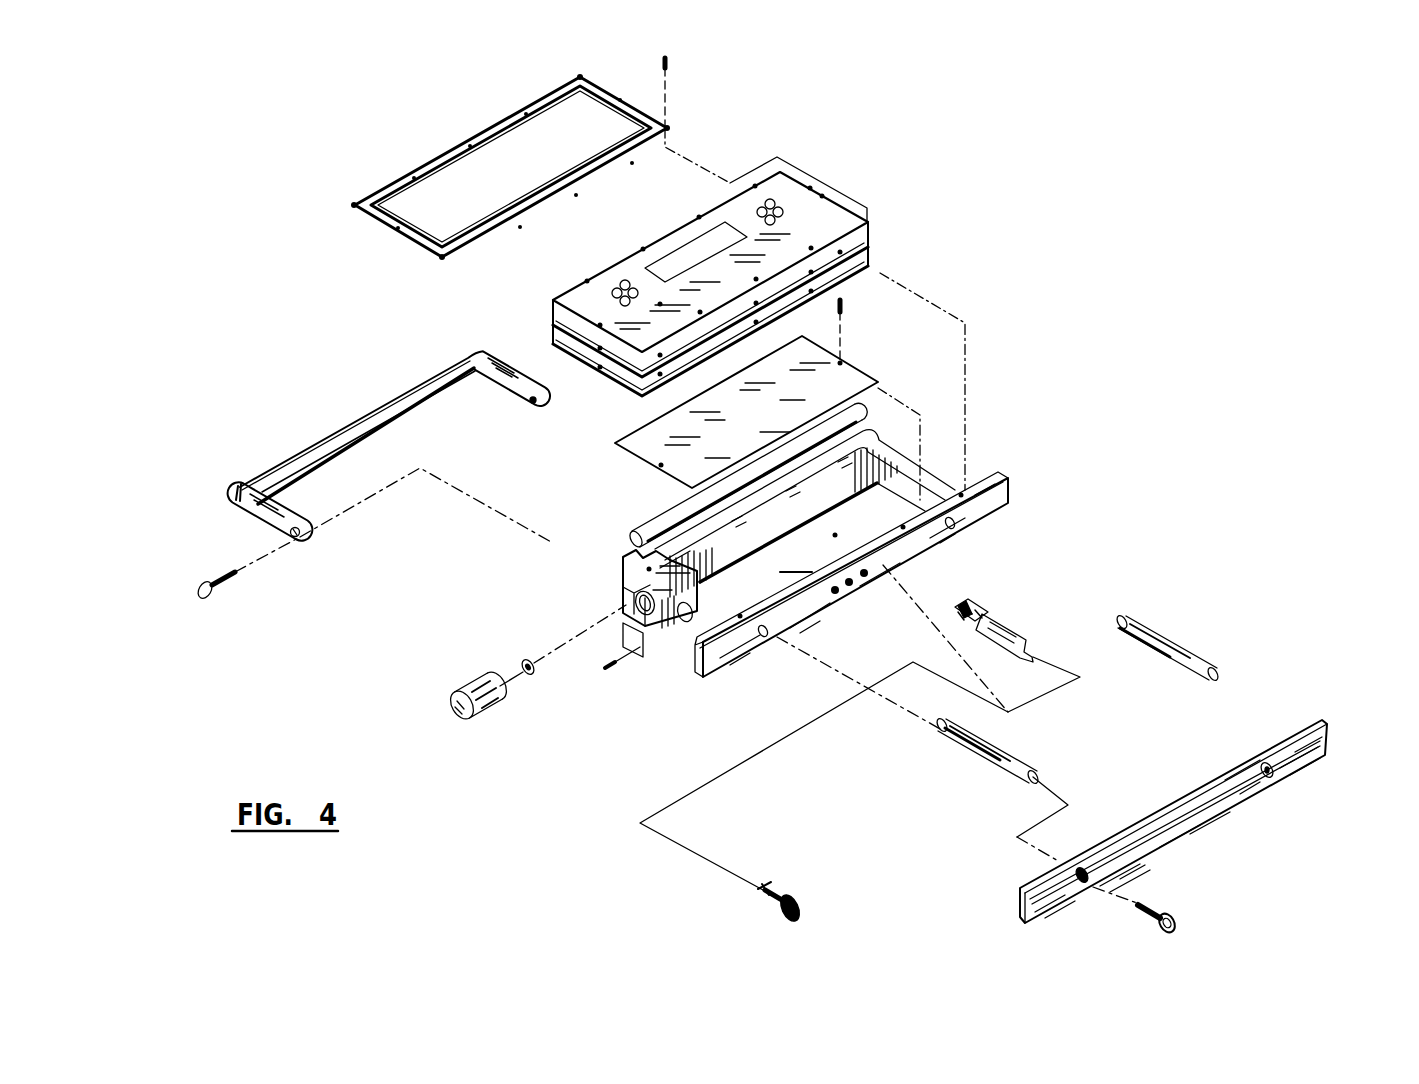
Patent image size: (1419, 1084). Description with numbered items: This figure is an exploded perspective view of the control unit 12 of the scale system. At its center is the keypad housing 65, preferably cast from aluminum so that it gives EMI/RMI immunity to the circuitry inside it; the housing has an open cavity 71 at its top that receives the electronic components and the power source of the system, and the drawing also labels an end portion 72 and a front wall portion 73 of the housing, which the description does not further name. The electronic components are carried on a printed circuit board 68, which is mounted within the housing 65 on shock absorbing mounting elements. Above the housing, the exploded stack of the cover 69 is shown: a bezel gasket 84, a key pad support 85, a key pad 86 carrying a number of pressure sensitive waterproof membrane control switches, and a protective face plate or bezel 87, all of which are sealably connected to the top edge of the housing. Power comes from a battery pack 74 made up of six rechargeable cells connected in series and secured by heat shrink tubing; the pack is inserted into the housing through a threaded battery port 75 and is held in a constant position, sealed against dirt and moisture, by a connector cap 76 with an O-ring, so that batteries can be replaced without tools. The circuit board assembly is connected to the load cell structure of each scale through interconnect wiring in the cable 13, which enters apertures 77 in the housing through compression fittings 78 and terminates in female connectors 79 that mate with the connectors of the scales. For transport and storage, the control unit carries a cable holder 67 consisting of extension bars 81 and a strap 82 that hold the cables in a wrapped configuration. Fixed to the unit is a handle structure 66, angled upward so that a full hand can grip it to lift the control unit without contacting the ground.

The control unit 12 is at (1180, 290).
The cable 13 is at (1022, 648).
The keypad housing 65 is at (1018, 430).
The handle structure 66 is at (258, 522).
The cable holder 67 is at (1290, 604).
The printed circuit board 68 is at (646, 440).
The cover 69 is at (885, 168).
The open cavity 71 is at (805, 513).
The end block 72 is at (623, 568).
The front bar 73 is at (728, 665).
The battery pack 74 is at (628, 545).
The threaded battery port 75 is at (635, 603).
The connector cap 76 is at (462, 688).
The apertures 77 is at (866, 576).
The compression fittings 78 is at (972, 606).
The female connectors 79 is at (795, 892).
The extension bars 81 is at (1175, 647).
The strap 82 is at (1198, 825).
The bezel gasket 84 is at (870, 280).
The key pad support 85 is at (868, 243).
The key pad 86 is at (800, 190).
The face plate 87 is at (440, 158).